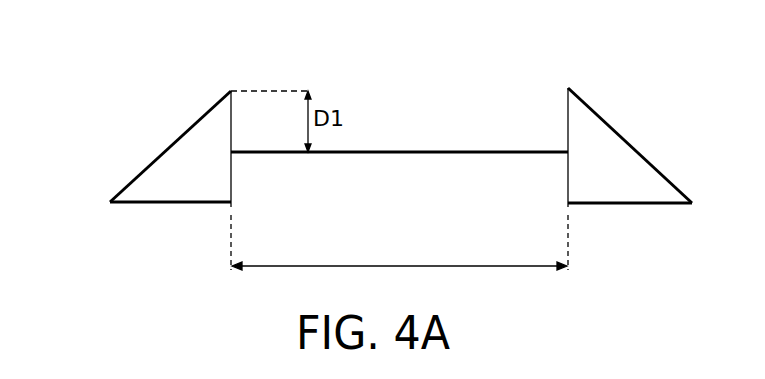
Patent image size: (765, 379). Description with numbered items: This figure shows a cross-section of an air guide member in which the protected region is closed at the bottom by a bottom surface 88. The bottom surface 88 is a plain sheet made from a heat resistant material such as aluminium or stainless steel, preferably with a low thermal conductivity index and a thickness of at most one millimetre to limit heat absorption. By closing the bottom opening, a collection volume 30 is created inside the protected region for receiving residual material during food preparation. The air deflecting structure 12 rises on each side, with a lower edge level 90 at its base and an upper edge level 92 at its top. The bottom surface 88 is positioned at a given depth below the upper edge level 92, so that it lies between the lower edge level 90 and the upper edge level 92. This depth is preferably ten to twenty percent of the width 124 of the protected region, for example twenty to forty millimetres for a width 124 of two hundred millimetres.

The air deflecting structure 12 is at (157, 152).
The collection volume 30 is at (499, 128).
The bottom surface 88 is at (410, 152).
The lower edge level 90 is at (110, 202).
The upper edge level 92 is at (232, 91).
The width 124 is at (399, 242).